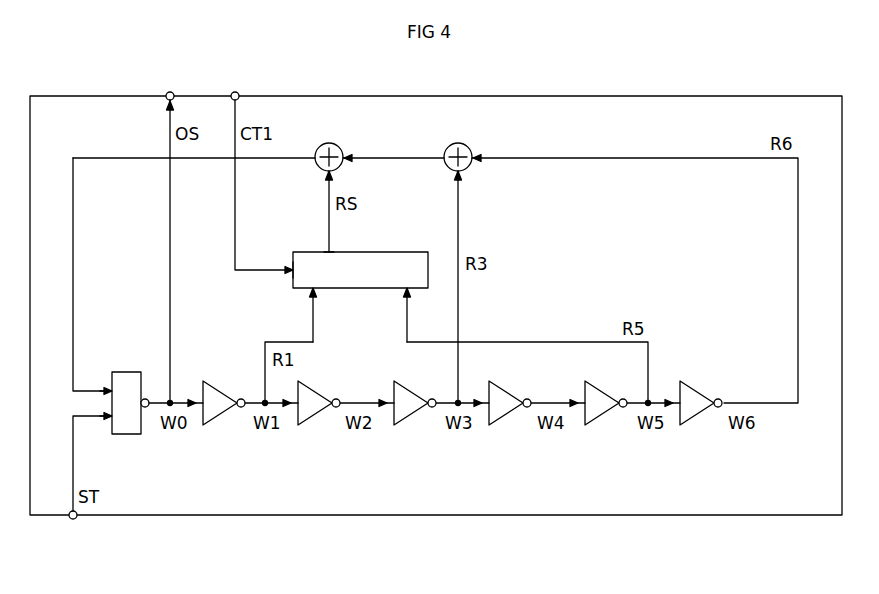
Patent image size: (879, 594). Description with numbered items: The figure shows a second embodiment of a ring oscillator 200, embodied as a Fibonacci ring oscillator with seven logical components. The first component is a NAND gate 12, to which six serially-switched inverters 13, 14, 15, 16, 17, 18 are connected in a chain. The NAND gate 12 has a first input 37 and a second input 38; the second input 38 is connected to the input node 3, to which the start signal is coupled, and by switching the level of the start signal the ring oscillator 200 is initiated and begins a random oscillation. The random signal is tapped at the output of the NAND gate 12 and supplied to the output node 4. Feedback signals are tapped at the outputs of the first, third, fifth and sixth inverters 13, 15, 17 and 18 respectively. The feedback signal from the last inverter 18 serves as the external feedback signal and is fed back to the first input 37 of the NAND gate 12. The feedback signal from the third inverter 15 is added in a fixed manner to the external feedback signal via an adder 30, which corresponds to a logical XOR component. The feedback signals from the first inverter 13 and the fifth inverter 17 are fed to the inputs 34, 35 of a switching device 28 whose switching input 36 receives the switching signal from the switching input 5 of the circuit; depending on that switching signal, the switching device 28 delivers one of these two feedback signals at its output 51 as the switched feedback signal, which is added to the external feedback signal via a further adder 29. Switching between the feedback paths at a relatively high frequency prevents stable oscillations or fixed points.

The input node 3 is at (73, 520).
The output node 4 is at (171, 90).
The switching input 5 is at (236, 90).
The NAND gate 12 is at (132, 430).
The inverter 13 is at (218, 416).
The inverter 14 is at (313, 416).
The inverter 15 is at (409, 416).
The inverter 16 is at (504, 416).
The inverter 17 is at (600, 416).
The inverter 18 is at (695, 416).
The switching device 28 is at (405, 262).
The adder 29 is at (340, 148).
The adder 30 is at (469, 148).
The input of switching device 34 is at (306, 290).
The input of switching device 35 is at (414, 290).
The switching input of switching device 36 is at (292, 260).
The first input of NAND gate 37 is at (110, 386).
The second input of NAND gate 38 is at (110, 420).
The output of switching device 51 is at (333, 250).
The ring oscillator 200 is at (505, 515).